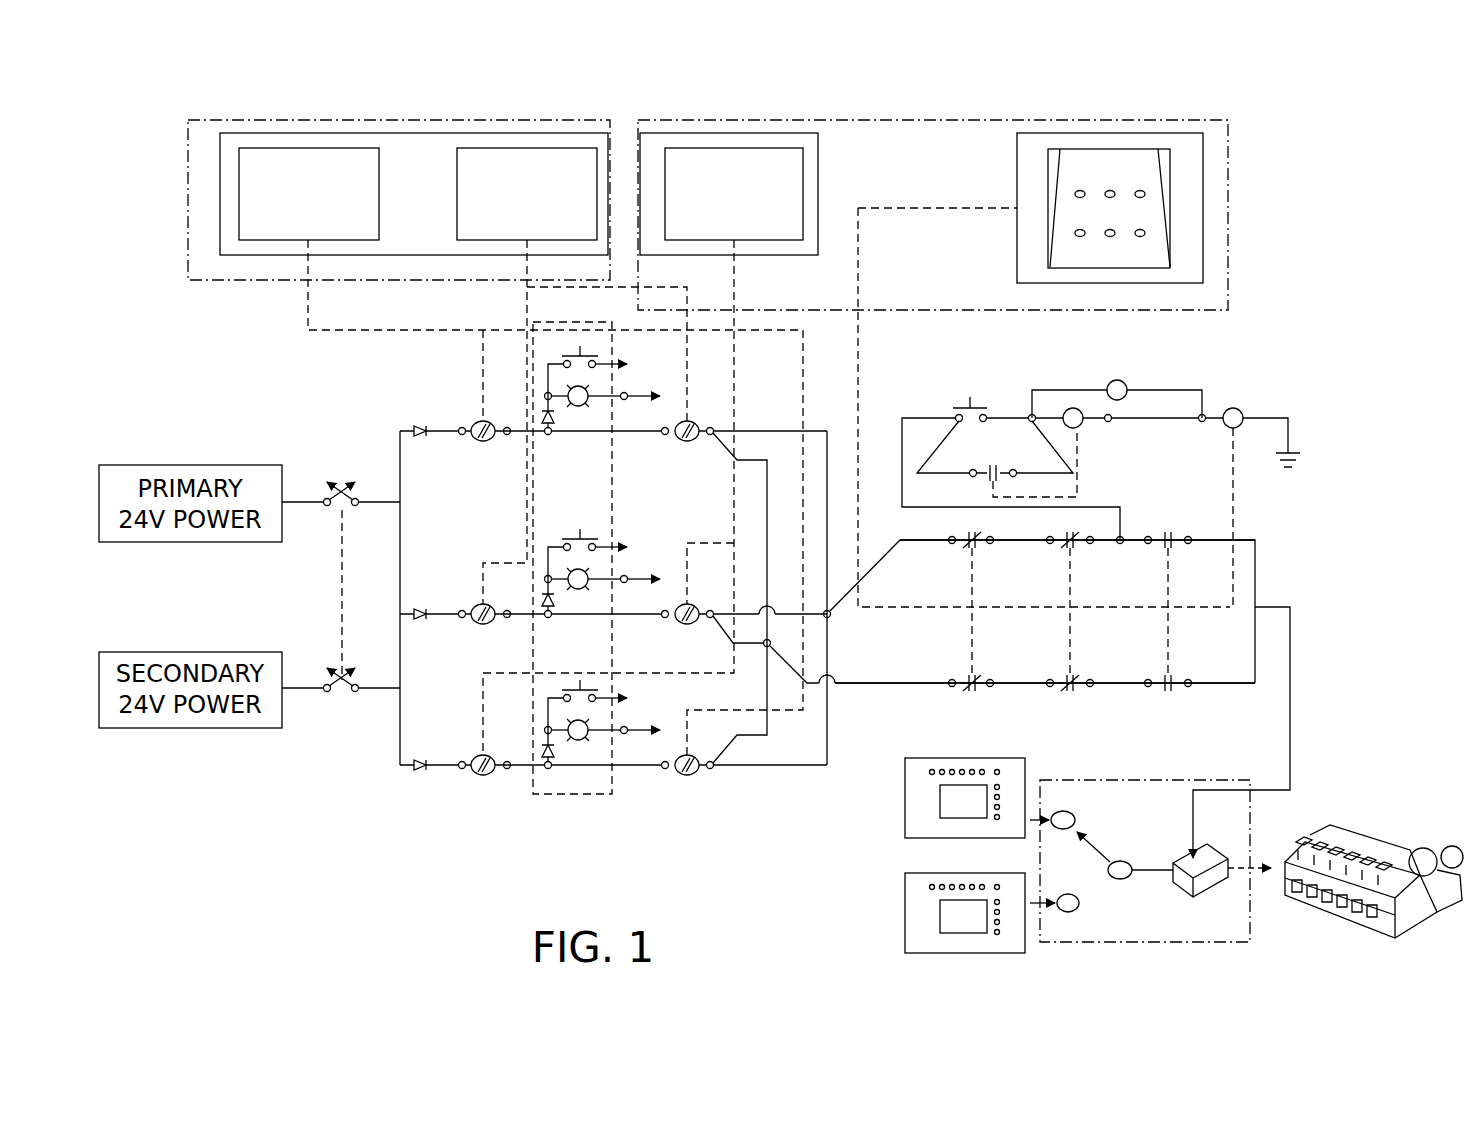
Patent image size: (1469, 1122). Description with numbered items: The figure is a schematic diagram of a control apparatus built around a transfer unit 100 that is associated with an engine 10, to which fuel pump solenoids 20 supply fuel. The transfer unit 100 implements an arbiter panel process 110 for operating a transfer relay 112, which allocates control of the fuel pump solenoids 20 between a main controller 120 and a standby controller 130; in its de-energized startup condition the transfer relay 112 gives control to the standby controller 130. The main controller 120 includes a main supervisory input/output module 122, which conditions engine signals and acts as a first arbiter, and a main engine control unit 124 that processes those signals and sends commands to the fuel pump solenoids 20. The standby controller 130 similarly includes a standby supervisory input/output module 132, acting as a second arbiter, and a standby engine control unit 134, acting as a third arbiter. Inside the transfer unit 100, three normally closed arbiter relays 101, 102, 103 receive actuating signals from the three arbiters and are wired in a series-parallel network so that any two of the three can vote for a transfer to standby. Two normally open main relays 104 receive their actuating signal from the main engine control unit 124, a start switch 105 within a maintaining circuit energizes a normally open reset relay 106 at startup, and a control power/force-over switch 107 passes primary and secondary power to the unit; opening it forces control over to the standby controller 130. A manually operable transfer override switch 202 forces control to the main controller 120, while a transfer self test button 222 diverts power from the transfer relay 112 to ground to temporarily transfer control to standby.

The engine 10 is at (1437, 830).
The fuel pump solenoids 20 is at (1290, 820).
The transfer unit 100 is at (1275, 256).
The arbiter relay 101 is at (478, 417).
The arbiter relay 102 is at (688, 634).
The arbiter relay 103 is at (688, 455).
The main relay 104 is at (1079, 556).
The start switch 105 is at (979, 389).
The reset relay 106 is at (1130, 376).
The control power/force-over switch 107 is at (335, 726).
The arbiter panel process 110 is at (1303, 331).
The transfer relay 112 is at (1226, 780).
The main controller 120 is at (884, 119).
The main supervisory input/output module 122 is at (734, 148).
The main engine control unit 124 is at (1100, 152).
The standby controller 130 is at (212, 119).
The standby supervisory input/output module 132 is at (309, 148).
The standby engine control unit 134 is at (527, 148).
The transfer override switch 202 is at (1110, 805).
The transfer self test button 222 is at (570, 810).